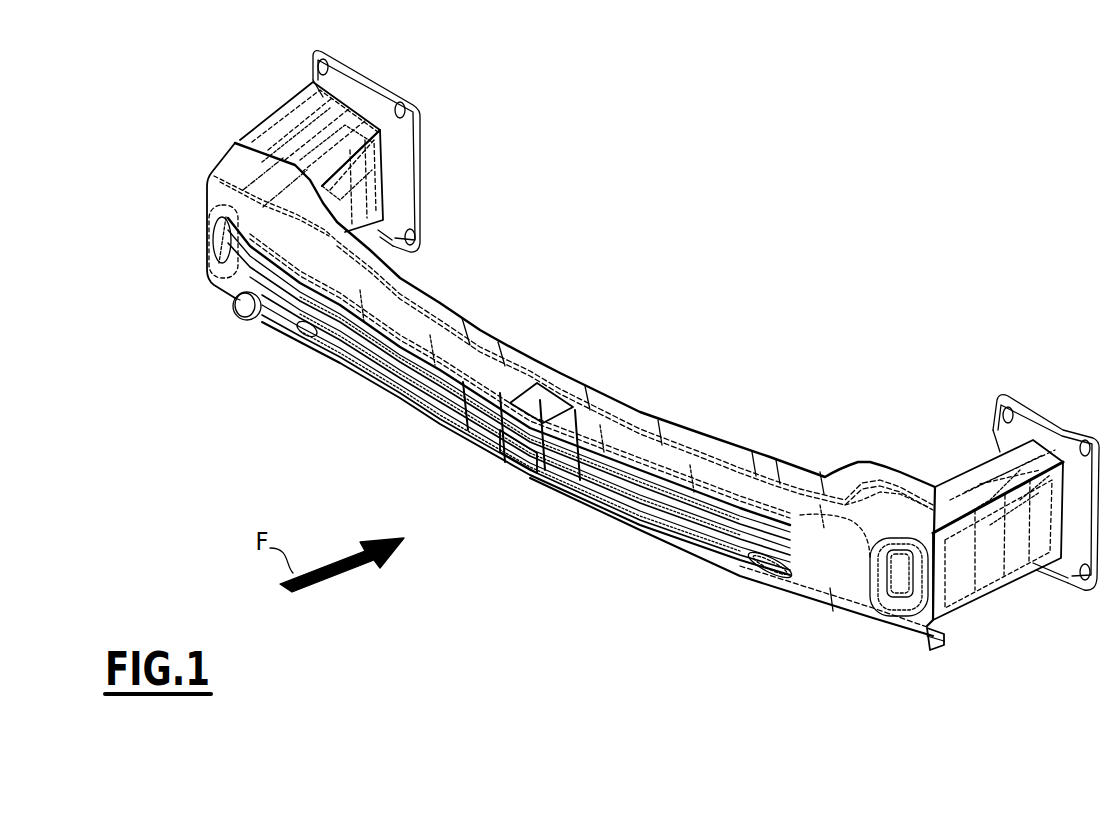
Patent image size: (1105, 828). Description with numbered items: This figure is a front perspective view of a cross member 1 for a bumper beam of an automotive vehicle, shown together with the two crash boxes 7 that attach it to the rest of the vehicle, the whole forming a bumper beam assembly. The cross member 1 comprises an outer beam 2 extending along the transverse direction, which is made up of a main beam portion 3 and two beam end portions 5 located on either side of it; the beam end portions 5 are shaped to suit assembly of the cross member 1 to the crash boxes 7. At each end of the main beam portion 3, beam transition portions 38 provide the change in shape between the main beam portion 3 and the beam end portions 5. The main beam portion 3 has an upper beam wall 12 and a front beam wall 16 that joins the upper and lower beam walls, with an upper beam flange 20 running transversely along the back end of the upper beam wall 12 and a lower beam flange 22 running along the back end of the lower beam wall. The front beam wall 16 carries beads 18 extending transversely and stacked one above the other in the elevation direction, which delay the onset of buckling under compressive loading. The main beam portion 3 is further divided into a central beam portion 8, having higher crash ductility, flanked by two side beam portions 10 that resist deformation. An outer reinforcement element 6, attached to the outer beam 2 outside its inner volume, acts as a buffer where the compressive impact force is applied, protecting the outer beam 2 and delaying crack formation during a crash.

The cross member 1 is at (652, 362).
The outer beam 2 is at (556, 365).
The main beam portion 3 is at (487, 333).
The beam end portions 5 is at (253, 192).
The outer reinforcement element 6 is at (520, 467).
The crash boxes 7 is at (290, 130).
The central beam portion 8 is at (587, 383).
The side beam portions 10 is at (443, 313).
The upper beam wall 12 is at (677, 467).
The front beam wall 16 is at (413, 387).
The beads 18 is at (320, 353).
The upper beam flange 20 is at (742, 467).
The lower beam flange 22 is at (933, 647).
The beam transition portions 38 is at (320, 263).